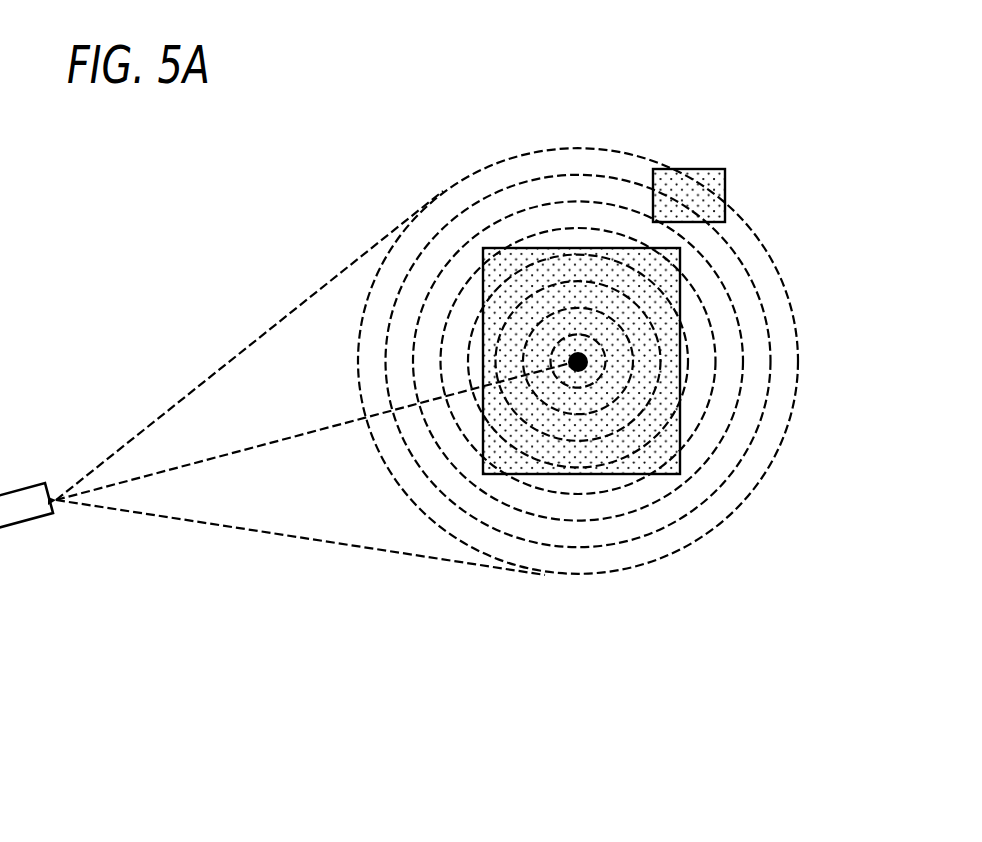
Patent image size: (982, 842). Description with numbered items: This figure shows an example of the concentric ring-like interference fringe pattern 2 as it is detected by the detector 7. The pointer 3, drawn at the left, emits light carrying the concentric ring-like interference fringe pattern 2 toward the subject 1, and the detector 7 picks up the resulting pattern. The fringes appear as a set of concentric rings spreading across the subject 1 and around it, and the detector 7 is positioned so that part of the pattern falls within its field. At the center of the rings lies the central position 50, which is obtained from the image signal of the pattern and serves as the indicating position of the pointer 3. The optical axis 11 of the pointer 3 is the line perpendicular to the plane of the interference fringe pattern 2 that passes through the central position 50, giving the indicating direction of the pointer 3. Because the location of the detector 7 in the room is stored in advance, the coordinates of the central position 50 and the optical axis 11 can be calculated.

The subject 1 is at (553, 248).
The concentric ring-like interference fringe pattern 2 is at (372, 283).
The pointer 3 is at (22, 522).
The detector 7 is at (690, 169).
The optical axis 11 is at (283, 440).
The central position 50 is at (580, 372).